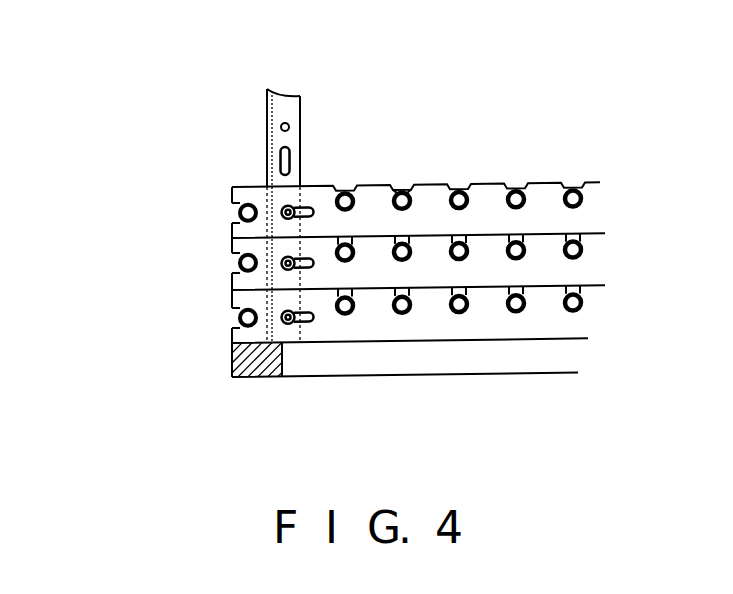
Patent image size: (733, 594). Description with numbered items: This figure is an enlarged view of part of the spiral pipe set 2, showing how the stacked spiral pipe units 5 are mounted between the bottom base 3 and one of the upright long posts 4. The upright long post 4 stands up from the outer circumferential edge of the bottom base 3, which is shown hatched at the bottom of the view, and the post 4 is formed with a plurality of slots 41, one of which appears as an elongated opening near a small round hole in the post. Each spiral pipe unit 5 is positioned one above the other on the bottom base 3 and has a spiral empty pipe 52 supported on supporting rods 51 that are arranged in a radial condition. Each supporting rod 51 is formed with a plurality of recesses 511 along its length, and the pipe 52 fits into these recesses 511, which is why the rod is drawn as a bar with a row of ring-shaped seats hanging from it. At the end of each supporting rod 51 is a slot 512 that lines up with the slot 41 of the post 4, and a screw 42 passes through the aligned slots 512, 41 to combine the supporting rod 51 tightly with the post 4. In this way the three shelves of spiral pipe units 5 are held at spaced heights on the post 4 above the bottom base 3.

The spiral pipe set 2 is at (87, 175).
The bottom base 3 is at (233, 368).
The upright long post 4 is at (293, 107).
The slot 41 is at (292, 158).
The screw 42 is at (281, 207).
The spiral pipe unit 5 is at (222, 219).
The supporting rod 51 is at (483, 193).
The recess 511 is at (414, 197).
The slot 512 is at (312, 205).
The spiral empty pipe 52 is at (402, 193).